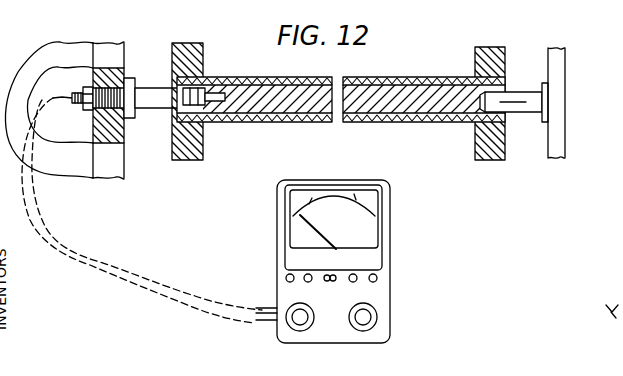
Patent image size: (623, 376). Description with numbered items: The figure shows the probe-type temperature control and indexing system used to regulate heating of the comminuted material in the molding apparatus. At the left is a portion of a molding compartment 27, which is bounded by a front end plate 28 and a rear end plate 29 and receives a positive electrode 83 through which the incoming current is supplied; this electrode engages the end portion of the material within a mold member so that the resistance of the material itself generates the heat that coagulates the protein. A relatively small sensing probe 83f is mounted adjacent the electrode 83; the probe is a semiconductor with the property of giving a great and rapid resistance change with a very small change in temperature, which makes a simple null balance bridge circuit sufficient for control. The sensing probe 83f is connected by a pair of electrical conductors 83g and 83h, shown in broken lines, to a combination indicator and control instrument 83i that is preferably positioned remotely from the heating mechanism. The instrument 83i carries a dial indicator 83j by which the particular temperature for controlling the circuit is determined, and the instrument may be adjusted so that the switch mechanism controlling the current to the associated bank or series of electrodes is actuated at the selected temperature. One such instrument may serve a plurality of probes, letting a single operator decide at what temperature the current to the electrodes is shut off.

The positive electrode 83 is at (163, 97).
The sensing probe 83f is at (219, 101).
The electrical conductor 83g is at (84, 250).
The electrical conductor 83h is at (120, 283).
The combination indicator and control instrument 83i is at (388, 268).
The dial indicator 83j is at (367, 235).
The molding compartment 27 is at (115, 5).
The front end plate 28 is at (15, 6).
The rear end plate 29 is at (551, 11).